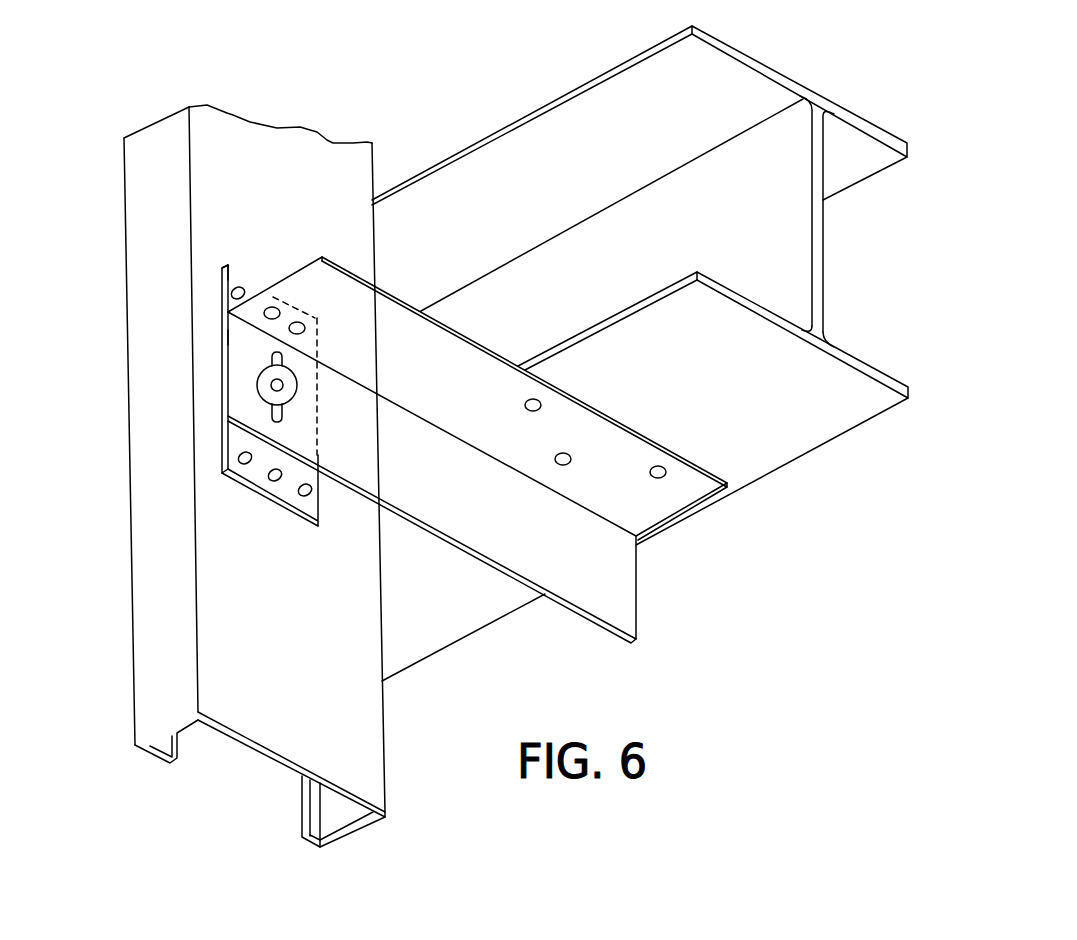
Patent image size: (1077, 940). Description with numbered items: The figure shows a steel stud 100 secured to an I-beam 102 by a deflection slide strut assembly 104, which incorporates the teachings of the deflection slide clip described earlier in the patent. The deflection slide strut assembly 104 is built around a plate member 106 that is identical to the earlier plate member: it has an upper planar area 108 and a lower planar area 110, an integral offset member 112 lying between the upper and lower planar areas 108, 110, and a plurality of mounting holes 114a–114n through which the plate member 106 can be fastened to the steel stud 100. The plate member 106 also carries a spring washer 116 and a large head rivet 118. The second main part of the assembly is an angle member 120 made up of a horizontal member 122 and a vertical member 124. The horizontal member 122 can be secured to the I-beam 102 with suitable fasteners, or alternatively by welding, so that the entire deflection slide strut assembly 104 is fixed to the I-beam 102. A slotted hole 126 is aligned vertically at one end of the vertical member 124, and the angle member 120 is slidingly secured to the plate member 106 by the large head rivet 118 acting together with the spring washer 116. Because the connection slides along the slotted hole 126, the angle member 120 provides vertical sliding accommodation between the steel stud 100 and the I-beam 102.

The steel stud 100 is at (230, 133).
The I-beam 102 is at (713, 68).
The deflection slide strut assembly 104 is at (391, 317).
The plate member 106 is at (196, 455).
The upper planar area 108 is at (229, 278).
The lower planar area 110 is at (262, 472).
The integral offset member 112 is at (222, 356).
The mounting hole 114a is at (222, 294).
The mounting hole 114n is at (309, 492).
The spring washer 116 is at (257, 377).
The large head rivet 118 is at (283, 385).
The angle member 120 is at (672, 597).
The horizontal member 122 is at (478, 395).
The vertical member 124 is at (495, 514).
The slotted hole 126 is at (229, 338).